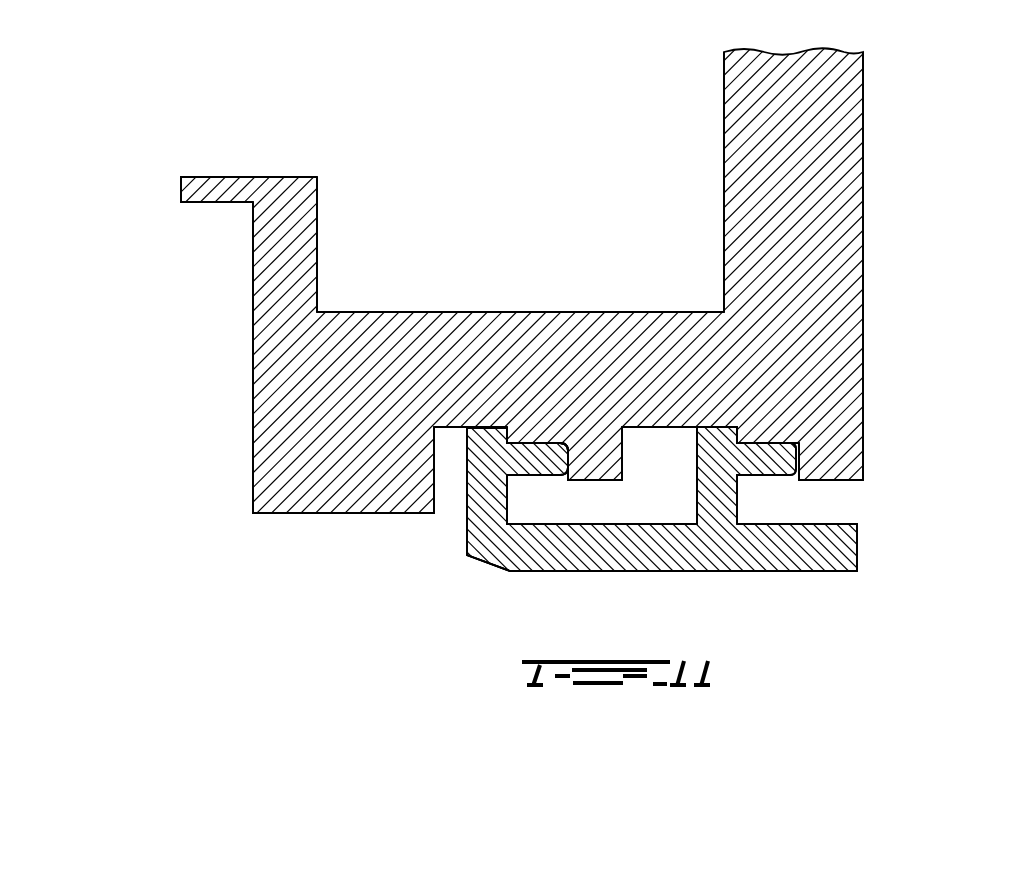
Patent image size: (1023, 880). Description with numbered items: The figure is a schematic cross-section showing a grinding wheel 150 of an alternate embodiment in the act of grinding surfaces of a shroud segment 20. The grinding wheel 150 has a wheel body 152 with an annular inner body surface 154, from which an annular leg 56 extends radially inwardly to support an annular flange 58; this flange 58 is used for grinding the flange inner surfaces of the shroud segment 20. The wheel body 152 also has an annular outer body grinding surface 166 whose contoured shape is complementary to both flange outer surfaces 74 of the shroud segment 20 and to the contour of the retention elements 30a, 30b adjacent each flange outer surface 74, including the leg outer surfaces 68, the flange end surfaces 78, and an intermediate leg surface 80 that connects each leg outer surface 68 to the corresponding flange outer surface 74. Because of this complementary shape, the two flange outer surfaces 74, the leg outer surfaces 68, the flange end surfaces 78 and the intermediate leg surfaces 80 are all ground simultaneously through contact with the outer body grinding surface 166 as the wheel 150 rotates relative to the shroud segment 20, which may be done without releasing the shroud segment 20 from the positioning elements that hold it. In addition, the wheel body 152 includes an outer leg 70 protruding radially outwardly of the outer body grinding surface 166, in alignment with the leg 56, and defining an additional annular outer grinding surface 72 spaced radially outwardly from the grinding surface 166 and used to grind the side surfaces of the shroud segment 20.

The shroud segment 20 is at (860, 548).
The retention element 30a is at (485, 497).
The retention element 30b is at (723, 496).
The annular leg 56 is at (213, 180).
The annular flange 58 is at (272, 262).
The leg outer surface 68 is at (478, 427).
The outer leg 70 is at (277, 458).
The additional annular outer grinding surface 72 is at (356, 514).
The flange outer surface 74 is at (535, 446).
The flange end surface 78 is at (568, 449).
The intermediate leg surface 80 is at (511, 442).
The grinding wheel 150 is at (867, 172).
The wheel body 152 is at (482, 329).
The annular inner body surface 154 is at (650, 312).
The annular outer body grinding surface 166 is at (662, 427).